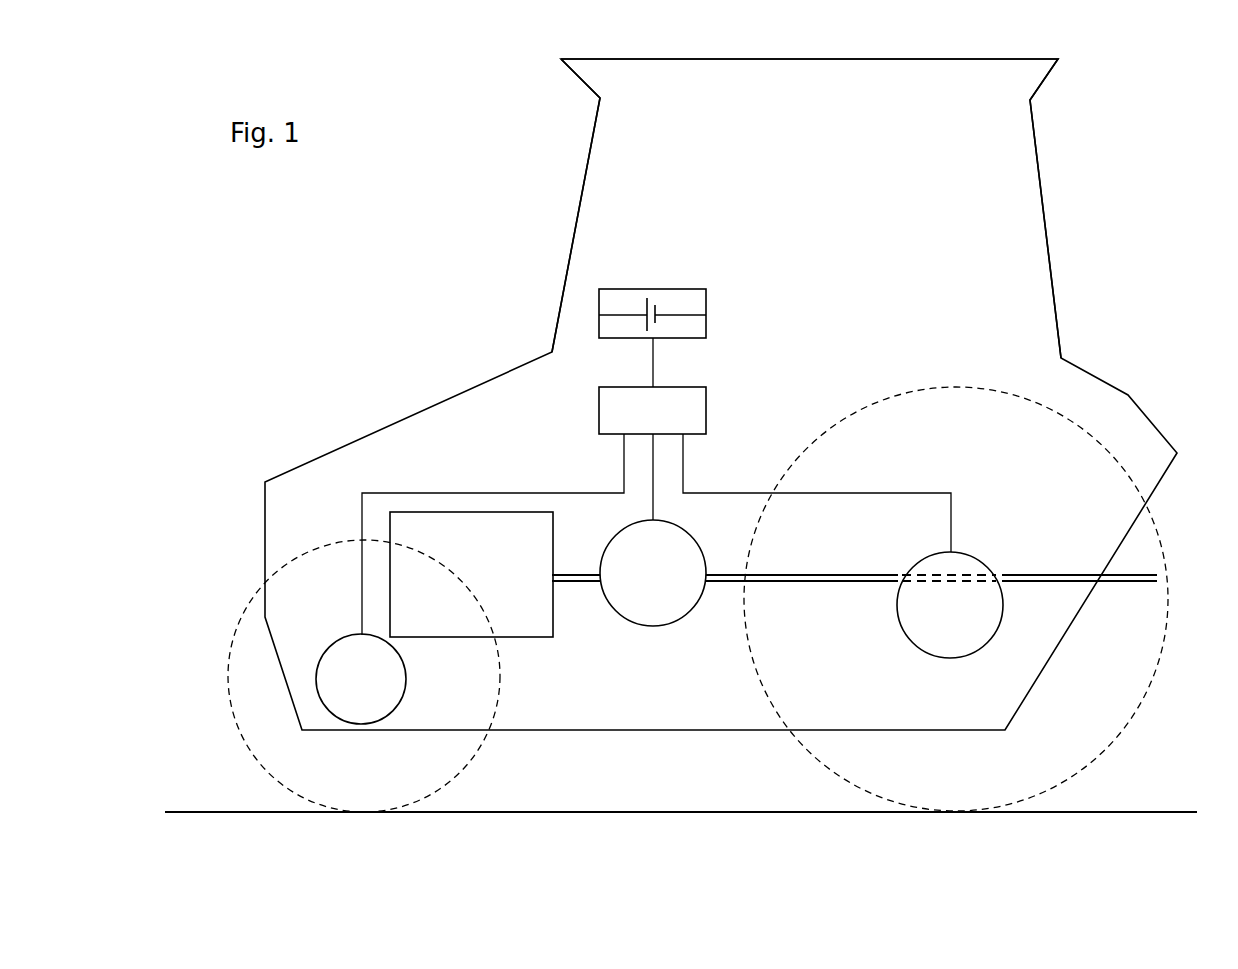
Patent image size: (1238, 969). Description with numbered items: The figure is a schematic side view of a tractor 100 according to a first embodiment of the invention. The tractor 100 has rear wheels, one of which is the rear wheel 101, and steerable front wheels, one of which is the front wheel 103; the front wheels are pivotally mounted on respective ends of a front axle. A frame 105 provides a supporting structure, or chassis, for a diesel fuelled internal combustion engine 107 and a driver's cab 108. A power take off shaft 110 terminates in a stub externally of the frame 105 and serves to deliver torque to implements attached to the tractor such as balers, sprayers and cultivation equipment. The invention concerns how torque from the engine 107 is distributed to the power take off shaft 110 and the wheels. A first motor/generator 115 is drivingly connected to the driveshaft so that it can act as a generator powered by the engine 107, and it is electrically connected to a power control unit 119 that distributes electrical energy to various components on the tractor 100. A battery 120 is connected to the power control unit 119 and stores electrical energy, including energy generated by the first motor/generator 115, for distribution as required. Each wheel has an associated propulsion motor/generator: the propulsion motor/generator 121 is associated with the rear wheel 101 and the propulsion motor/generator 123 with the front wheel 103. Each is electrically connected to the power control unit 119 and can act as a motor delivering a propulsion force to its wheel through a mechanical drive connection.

The tractor 100 is at (1165, 97).
The rear wheel 101 is at (1148, 683).
The front wheel 103 is at (480, 752).
The frame 105 is at (688, 730).
The internal combustion engine 107 is at (553, 627).
The driver's cab 108 is at (1015, 183).
The power take off shaft 110 is at (1138, 574).
The first motor/generator 115 is at (676, 621).
The power control unit 119 is at (706, 393).
The battery 120 is at (706, 296).
The propulsion motor/generator 121 is at (986, 563).
The propulsion motor/generator 123 is at (408, 680).